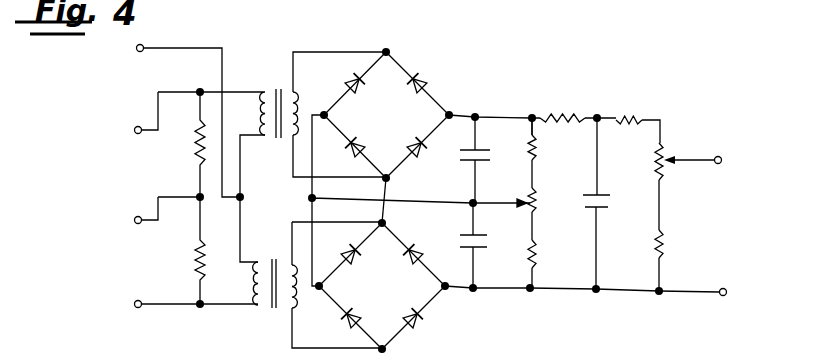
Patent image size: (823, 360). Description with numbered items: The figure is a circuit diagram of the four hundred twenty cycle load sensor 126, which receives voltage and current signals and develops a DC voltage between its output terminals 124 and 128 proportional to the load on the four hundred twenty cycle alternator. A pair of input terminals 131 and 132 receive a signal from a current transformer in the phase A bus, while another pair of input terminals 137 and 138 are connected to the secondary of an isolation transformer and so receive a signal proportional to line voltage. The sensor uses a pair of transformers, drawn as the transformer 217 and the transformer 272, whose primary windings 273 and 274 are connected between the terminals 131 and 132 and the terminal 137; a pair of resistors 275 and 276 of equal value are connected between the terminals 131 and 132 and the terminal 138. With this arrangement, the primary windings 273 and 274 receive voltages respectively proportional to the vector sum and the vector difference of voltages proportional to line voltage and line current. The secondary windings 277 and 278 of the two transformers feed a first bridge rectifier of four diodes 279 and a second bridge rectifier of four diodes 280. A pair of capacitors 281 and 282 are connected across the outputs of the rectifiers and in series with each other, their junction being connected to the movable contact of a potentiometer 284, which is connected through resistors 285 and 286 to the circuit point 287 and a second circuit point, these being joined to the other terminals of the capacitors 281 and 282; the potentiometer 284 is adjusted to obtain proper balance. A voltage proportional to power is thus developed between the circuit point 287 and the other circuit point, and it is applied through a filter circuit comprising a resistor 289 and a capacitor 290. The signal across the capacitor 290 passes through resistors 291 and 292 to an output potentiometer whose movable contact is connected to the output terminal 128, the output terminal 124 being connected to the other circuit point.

The output terminal 124 is at (728, 290).
The load sensor 126 is at (677, 108).
The output terminal 128 is at (723, 162).
The input terminal 131 is at (133, 138).
The input terminal 132 is at (131, 305).
The input terminal 137 is at (145, 44).
The input terminal 138 is at (133, 227).
The transformer 217 is at (268, 92).
The transformer 272 is at (270, 263).
The primary winding 273 is at (259, 137).
The primary winding 274 is at (262, 289).
The resistor 275 is at (196, 150).
The resistor 276 is at (193, 259).
The secondary winding 277 is at (318, 80).
The secondary winding 278 is at (288, 306).
The diodes 279 is at (412, 136).
The diodes 280 is at (405, 304).
The capacitor 281 is at (471, 162).
The capacitor 282 is at (466, 236).
The potentiometer 284 is at (538, 203).
The resistor 285 is at (535, 150).
The resistor 286 is at (534, 253).
The circuit point 287 is at (533, 114).
The resistor 289 is at (573, 114).
The capacitor 290 is at (605, 210).
The resistor 291 is at (632, 114).
The resistor 292 is at (667, 241).